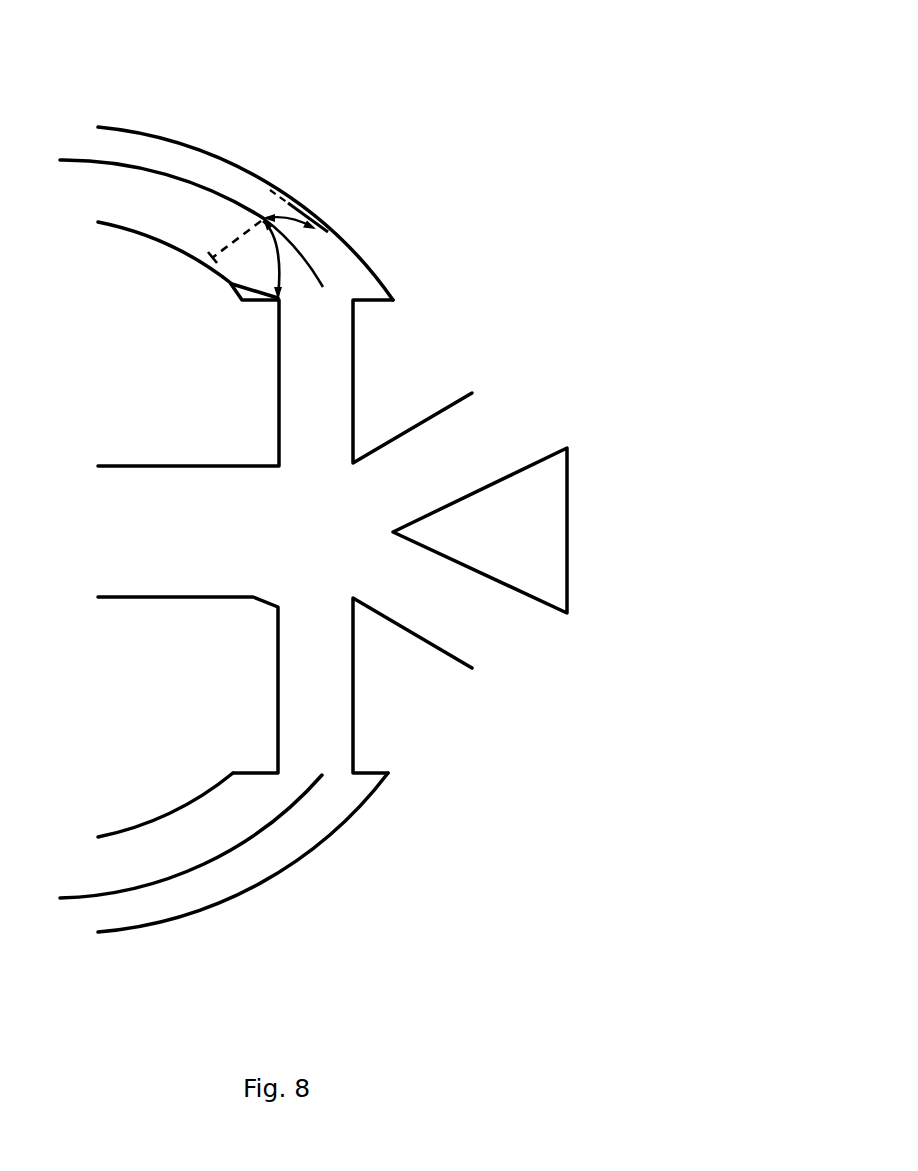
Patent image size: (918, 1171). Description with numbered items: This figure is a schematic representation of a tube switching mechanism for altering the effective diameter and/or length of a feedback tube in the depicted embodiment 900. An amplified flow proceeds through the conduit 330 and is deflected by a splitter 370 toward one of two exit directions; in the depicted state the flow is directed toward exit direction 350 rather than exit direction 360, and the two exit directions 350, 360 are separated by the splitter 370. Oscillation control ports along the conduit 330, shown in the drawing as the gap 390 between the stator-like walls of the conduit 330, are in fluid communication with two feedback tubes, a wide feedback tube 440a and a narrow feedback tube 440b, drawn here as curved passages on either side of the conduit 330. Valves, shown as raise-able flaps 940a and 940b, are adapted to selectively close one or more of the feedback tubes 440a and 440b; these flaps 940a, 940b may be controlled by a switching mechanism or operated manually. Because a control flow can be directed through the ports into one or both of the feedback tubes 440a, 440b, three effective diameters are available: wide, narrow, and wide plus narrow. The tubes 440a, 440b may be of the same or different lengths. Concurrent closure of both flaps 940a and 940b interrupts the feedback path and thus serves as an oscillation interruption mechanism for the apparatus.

The depicted embodiment 900 is at (366, 116).
The feedback tube 440b is at (229, 185).
The feedback tube 440a is at (189, 231).
The raise-able flap 940b is at (320, 229).
The raise-able flap 940a is at (240, 281).
The conduit 330 is at (135, 484).
The stator slot 390 is at (312, 375).
The exit direction 350 is at (508, 423).
The splitter 370 is at (552, 542).
The exit direction 360 is at (496, 644).